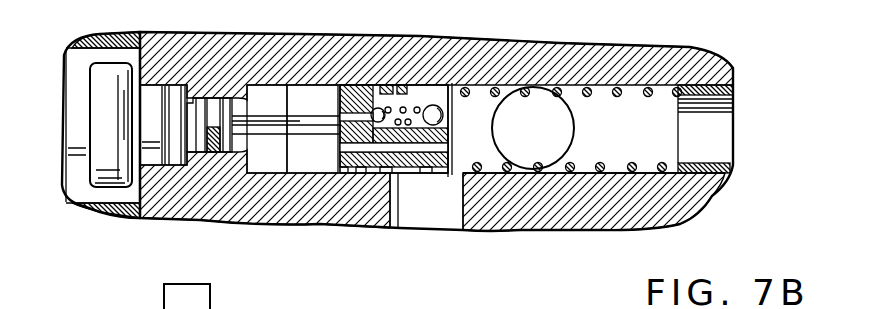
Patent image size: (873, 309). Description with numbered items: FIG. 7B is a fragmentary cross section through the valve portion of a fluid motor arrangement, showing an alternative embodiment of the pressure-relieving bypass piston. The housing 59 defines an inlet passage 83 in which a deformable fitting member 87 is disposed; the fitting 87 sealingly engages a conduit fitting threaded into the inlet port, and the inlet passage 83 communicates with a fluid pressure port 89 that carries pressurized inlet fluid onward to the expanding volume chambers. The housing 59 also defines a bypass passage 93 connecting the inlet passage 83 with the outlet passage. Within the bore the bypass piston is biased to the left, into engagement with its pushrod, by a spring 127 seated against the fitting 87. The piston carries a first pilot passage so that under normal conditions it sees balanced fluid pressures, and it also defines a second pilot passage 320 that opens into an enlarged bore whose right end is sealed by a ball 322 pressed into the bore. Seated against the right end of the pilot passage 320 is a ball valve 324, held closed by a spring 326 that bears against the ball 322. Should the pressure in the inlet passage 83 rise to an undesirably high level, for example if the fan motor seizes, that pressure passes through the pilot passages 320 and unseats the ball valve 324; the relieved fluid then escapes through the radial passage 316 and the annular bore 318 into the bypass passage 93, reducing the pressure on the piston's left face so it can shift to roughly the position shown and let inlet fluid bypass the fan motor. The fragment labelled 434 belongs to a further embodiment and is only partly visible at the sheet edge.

The housing 59 is at (712, 52).
The deformable fitting member 87 is at (731, 112).
The fluid pressure port 89 is at (533, 128).
The inlet passage 83 is at (572, 88).
The spring 127 is at (624, 85).
The radial passage 316 is at (401, 93).
The ball valve 324 is at (378, 108).
The second pilot passage 320 is at (342, 103).
The annular bore 318 is at (392, 175).
The ball 322 is at (414, 122).
The spring 326 is at (402, 126).
The bypass passage 93 is at (462, 221).
The element 434 is at (222, 308).